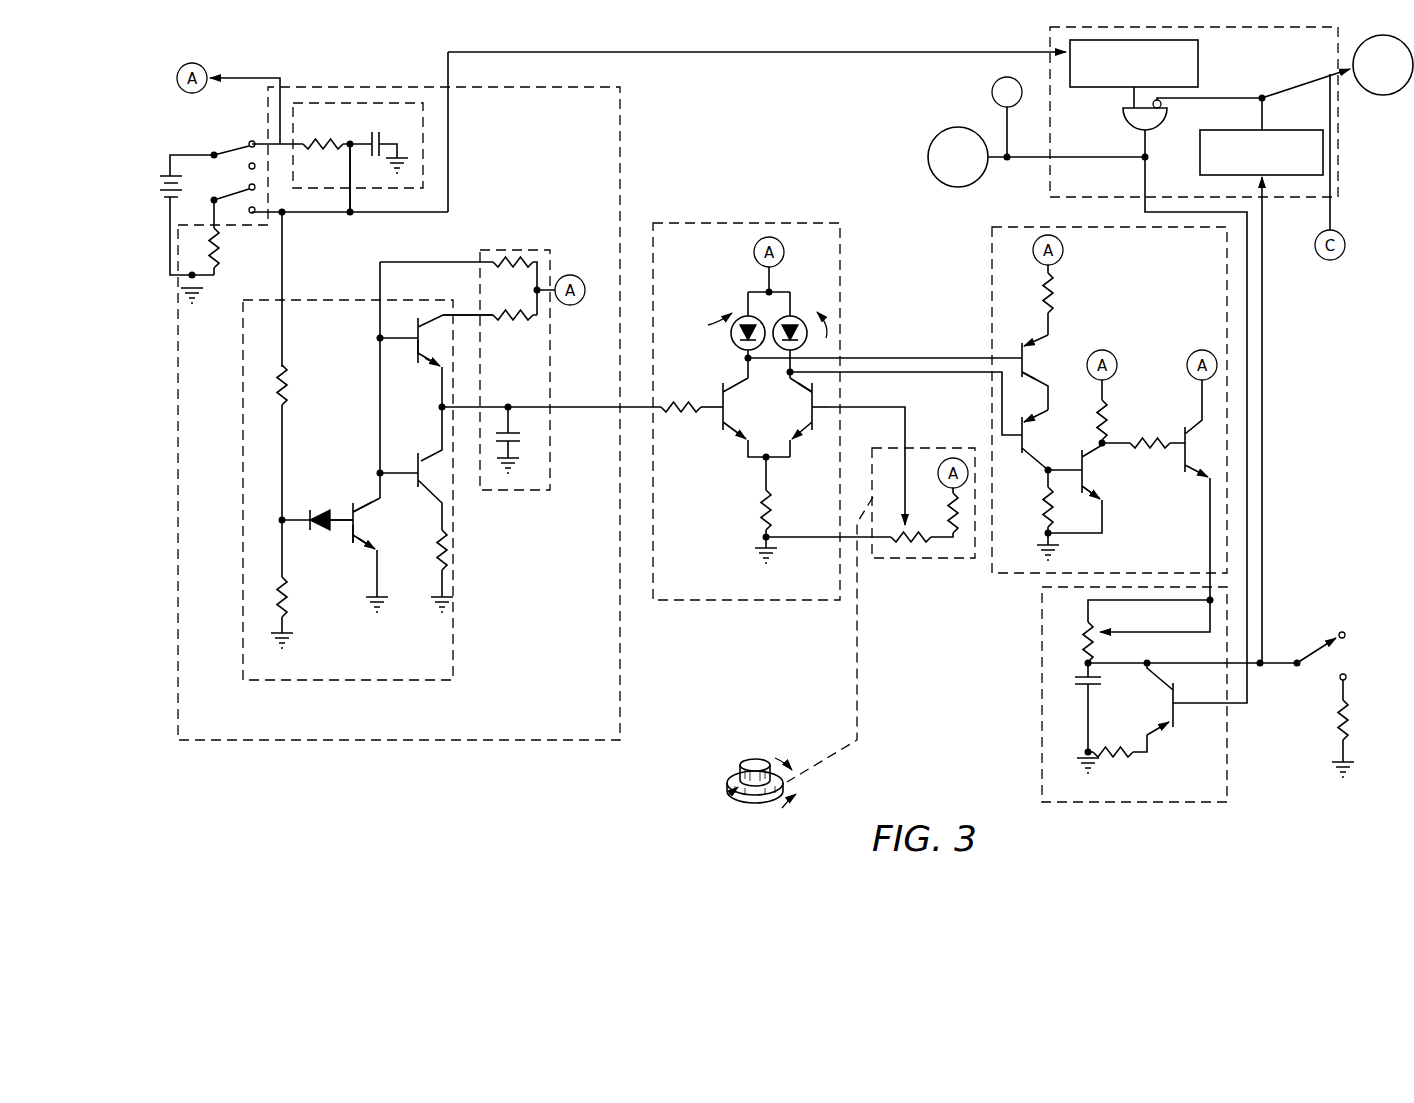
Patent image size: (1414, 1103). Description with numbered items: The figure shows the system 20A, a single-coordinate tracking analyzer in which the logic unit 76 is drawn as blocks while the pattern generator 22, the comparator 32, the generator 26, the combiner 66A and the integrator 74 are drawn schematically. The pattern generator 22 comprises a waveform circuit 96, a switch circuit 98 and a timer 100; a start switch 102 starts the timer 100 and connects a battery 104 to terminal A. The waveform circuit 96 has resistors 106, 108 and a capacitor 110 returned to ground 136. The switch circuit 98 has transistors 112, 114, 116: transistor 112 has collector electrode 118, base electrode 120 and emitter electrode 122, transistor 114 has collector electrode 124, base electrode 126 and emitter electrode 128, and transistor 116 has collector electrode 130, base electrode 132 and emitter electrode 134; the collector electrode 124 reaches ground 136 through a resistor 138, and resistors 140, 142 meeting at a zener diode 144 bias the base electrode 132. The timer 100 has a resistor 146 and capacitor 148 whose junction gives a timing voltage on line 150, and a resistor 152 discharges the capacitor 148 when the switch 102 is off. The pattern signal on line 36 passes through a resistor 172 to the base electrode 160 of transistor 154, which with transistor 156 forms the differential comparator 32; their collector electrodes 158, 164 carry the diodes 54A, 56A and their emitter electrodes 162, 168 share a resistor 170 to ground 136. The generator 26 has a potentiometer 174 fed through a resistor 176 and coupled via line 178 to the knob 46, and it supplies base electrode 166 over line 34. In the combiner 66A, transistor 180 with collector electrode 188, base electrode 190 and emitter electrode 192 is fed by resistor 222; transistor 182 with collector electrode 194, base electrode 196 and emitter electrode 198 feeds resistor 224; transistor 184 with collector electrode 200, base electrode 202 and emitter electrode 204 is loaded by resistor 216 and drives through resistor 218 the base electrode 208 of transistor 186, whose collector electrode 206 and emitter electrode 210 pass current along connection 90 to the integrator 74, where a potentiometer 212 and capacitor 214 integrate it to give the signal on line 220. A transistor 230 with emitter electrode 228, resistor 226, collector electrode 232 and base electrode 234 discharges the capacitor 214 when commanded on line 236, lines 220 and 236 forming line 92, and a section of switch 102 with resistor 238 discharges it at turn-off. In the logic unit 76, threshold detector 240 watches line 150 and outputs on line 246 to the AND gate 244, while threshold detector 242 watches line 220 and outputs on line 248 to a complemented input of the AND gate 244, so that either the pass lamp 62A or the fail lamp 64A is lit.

The system 20A is at (580, 775).
The pattern generator 22 is at (475, 748).
The generator 26 is at (935, 448).
The comparator 32 is at (780, 601).
The comparator output line 34 is at (908, 418).
The line 36 is at (642, 405).
The knob 46 is at (793, 783).
The diode 54A is at (745, 316).
The diode 56A is at (797, 316).
The lamp 62A is at (948, 133).
The lamp 64A is at (1384, 96).
The combiner 66A is at (990, 243).
The integrator 74 is at (1042, 633).
The logic unit 76 is at (1340, 127).
The combiner output line 90 is at (1213, 586).
The line 92 is at (1240, 466).
The waveform circuit 96 is at (551, 352).
The switch circuit 98 is at (455, 637).
The timer 100 is at (358, 190).
The start switch 102 is at (218, 141).
The battery 104 is at (160, 184).
The resistor 106 is at (510, 262).
The resistor 108 is at (512, 318).
The capacitor 110 is at (520, 436).
The transistor 112 is at (404, 332).
The transistor 114 is at (405, 468).
The transistor 116 is at (366, 498).
The collector electrode 118 is at (433, 320).
The base electrode 120 is at (412, 345).
The emitter electrode 122 is at (431, 366).
The collector electrode 124 is at (438, 505).
The base electrode 126 is at (383, 402).
The emitter electrode 128 is at (433, 458).
The collector electrode 130 is at (370, 516).
The base electrode 132 is at (348, 535).
The emitter electrode 134 is at (360, 552).
The ground 136 is at (387, 599).
The resistor 138 is at (450, 547).
The resistor 140 is at (288, 386).
The resistor 142 is at (288, 600).
The zener diode 144 is at (310, 511).
The resistor 146 is at (320, 150).
The capacitor 148 is at (375, 156).
The line 150 is at (362, 206).
The resistor 152 is at (218, 255).
The transistor 154 is at (736, 445).
The transistor 156 is at (810, 383).
The collector electrode 158 is at (740, 382).
The base electrode 160 is at (705, 410).
The emitter electrode 162 is at (720, 436).
The collector electrode 164 is at (796, 388).
The base electrode 166 is at (810, 417).
The emitter electrode 168 is at (800, 421).
The resistor 170 is at (760, 506).
The resistor 172 is at (684, 400).
The potentiometer 174 is at (915, 545).
The resistor 176 is at (948, 516).
The line 178 is at (862, 650).
The transistor 180 is at (1050, 353).
The transistor 182 is at (1056, 431).
The transistor 184 is at (1099, 471).
The transistor 186 is at (1214, 440).
The collector electrode 188 is at (1032, 378).
The base electrode 190 is at (1010, 357).
The emitter electrode 192 is at (1040, 338).
The collector electrode 194 is at (1034, 464).
The base electrode 196 is at (1030, 456).
The emitter electrode 198 is at (1023, 395).
The collector electrode 200 is at (1037, 440).
The base electrode 202 is at (1062, 465).
The emitter electrode 204 is at (1090, 496).
The collector electrode 206 is at (1200, 420).
The base electrode 208 is at (1196, 458).
The emitter electrode 210 is at (1205, 480).
The potentiometer 212 is at (1096, 630).
The capacitor 214 is at (1082, 686).
The resistor 216 is at (1110, 416).
The resistor 218 is at (1150, 437).
The line 220 is at (1262, 515).
The resistor 222 is at (1055, 295).
The resistor 224 is at (1042, 506).
The resistor 226 is at (1125, 758).
The emitter electrode 228 is at (1164, 722).
The transistor 230 is at (1176, 732).
The collector electrode 232 is at (1160, 685).
The base electrode 234 is at (1195, 702).
The line 236 is at (1262, 388).
The resistor 238 is at (1333, 721).
The threshold detector 240 is at (1200, 52).
The threshold detector 242 is at (1220, 177).
The AND gate 244 is at (1125, 136).
The line 246 is at (1132, 100).
The line 248 is at (1240, 100).